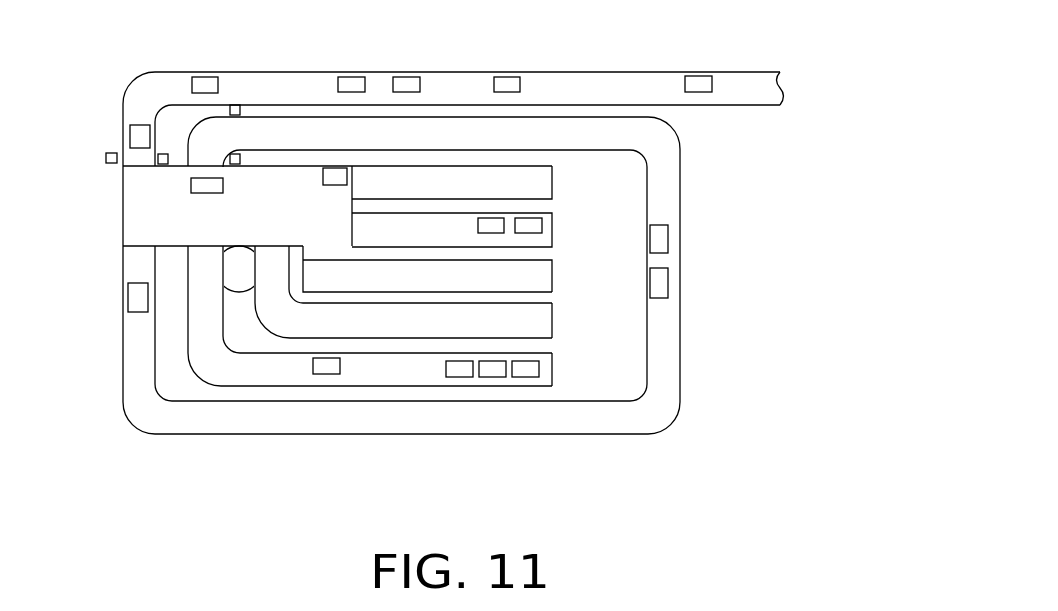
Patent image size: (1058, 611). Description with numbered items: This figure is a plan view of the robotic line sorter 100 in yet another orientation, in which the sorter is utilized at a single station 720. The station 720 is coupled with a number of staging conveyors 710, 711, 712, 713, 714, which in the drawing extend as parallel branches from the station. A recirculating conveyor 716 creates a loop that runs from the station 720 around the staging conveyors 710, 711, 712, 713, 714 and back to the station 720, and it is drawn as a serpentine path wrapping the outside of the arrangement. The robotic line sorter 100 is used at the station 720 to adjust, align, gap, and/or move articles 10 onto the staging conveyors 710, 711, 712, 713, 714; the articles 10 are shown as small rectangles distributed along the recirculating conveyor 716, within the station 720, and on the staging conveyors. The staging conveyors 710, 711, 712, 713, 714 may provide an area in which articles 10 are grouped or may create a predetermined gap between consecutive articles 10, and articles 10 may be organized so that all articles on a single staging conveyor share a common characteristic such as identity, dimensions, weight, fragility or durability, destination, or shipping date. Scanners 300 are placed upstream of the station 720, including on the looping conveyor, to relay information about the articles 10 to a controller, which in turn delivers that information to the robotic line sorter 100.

The article 10 is at (350, 76).
The robotic line sorter 100 is at (253, 245).
The scanner 300 is at (235, 104).
The staging conveyor 710 is at (555, 183).
The staging conveyor 711 is at (555, 231).
The staging conveyor 712 is at (555, 277).
The staging conveyor 713 is at (555, 323).
The staging conveyor 714 is at (553, 369).
The recirculating conveyor 716 is at (682, 337).
The station 720 is at (122, 205).